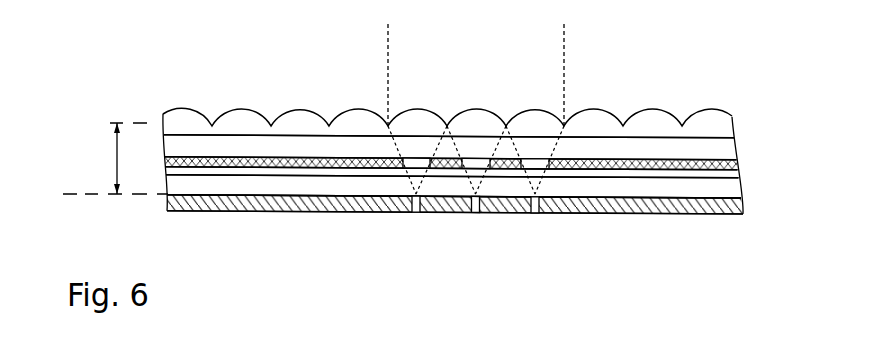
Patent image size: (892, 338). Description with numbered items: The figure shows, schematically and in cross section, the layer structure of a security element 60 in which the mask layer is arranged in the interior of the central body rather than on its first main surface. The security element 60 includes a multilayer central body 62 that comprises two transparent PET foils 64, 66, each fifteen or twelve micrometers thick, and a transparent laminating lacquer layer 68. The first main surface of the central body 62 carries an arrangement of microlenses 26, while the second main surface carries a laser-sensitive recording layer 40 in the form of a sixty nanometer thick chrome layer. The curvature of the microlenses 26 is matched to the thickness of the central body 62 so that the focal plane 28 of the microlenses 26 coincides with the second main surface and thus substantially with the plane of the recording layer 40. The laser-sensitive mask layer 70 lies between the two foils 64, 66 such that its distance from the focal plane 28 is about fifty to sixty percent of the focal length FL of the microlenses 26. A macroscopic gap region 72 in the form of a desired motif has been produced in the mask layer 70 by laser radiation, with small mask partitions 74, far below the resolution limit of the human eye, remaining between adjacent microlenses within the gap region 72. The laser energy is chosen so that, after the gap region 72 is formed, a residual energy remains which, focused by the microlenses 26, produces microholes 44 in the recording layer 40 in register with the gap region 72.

The security element 60 is at (132, 65).
The microlenses 26 is at (650, 124).
The focal plane 28 is at (72, 184).
The focal length FL is at (116, 152).
The gap region 72 is at (564, 38).
The mask partitions 74 is at (504, 157).
The mask layer 70 is at (697, 158).
The PET foil 66 is at (723, 150).
The laminating lacquer layer 68 is at (728, 175).
The PET foil 64 is at (728, 190).
The central body 62 is at (800, 118).
The recording layer 40 is at (742, 207).
The microholes 44 is at (477, 213).